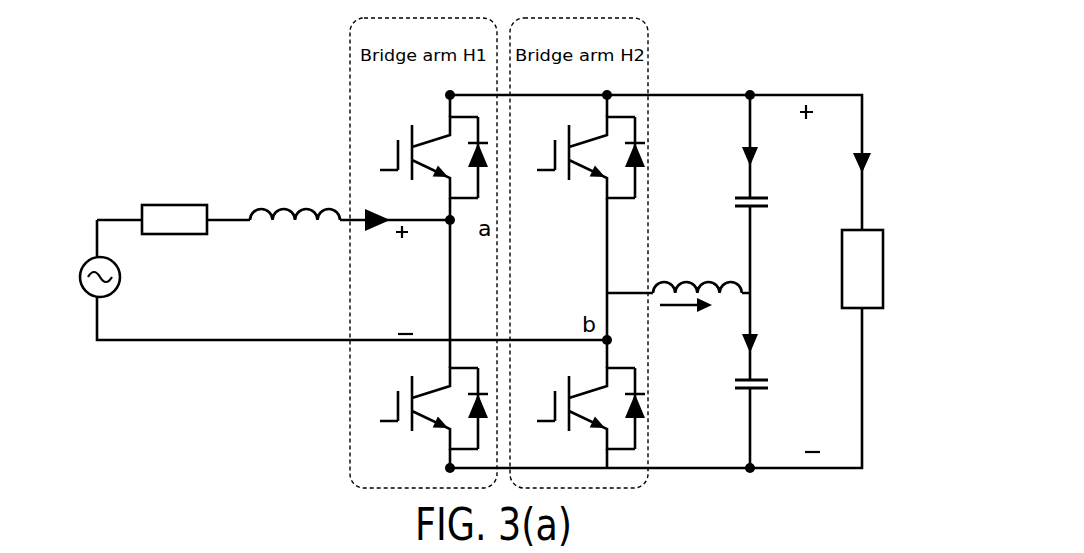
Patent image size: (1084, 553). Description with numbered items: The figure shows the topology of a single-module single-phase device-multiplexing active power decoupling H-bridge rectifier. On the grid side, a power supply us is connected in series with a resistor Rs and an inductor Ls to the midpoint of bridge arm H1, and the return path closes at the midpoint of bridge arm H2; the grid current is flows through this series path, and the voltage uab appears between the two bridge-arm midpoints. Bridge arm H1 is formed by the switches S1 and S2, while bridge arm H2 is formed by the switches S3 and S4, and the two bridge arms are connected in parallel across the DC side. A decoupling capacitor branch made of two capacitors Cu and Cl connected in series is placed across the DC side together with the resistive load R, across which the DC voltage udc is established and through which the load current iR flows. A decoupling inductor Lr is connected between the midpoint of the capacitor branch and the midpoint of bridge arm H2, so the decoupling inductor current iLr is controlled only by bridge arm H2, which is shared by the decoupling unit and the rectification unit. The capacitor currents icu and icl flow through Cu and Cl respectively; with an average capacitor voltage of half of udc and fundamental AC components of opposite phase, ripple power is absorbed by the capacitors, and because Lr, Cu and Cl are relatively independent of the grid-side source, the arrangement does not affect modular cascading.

The power supply us is at (112, 279).
The resistor Rs is at (174, 205).
The inductor Ls is at (295, 197).
The grid current is is at (377, 238).
The bridge output voltage between a and b uab is at (416, 280).
The IGBT switch S1 of bridge arm H1 S1 is at (425, 157).
The IGBT switch S2 of bridge arm H1 S2 is at (425, 408).
The IGBT switch S3 of bridge arm H2 S3 is at (582, 157).
The IGBT switch S4 of bridge arm H2 S4 is at (582, 408).
The decoupling inductor Lr is at (697, 268).
The decoupling inductor current iLr is at (686, 320).
The decoupling capacitor Cu is at (735, 204).
The capacitor current icu is at (761, 149).
The decoupling capacitor Cl is at (736, 391).
The capacitor current icl is at (759, 336).
The resistive load R is at (877, 269).
The load current iR is at (846, 171).
The DC voltage udc is at (829, 280).